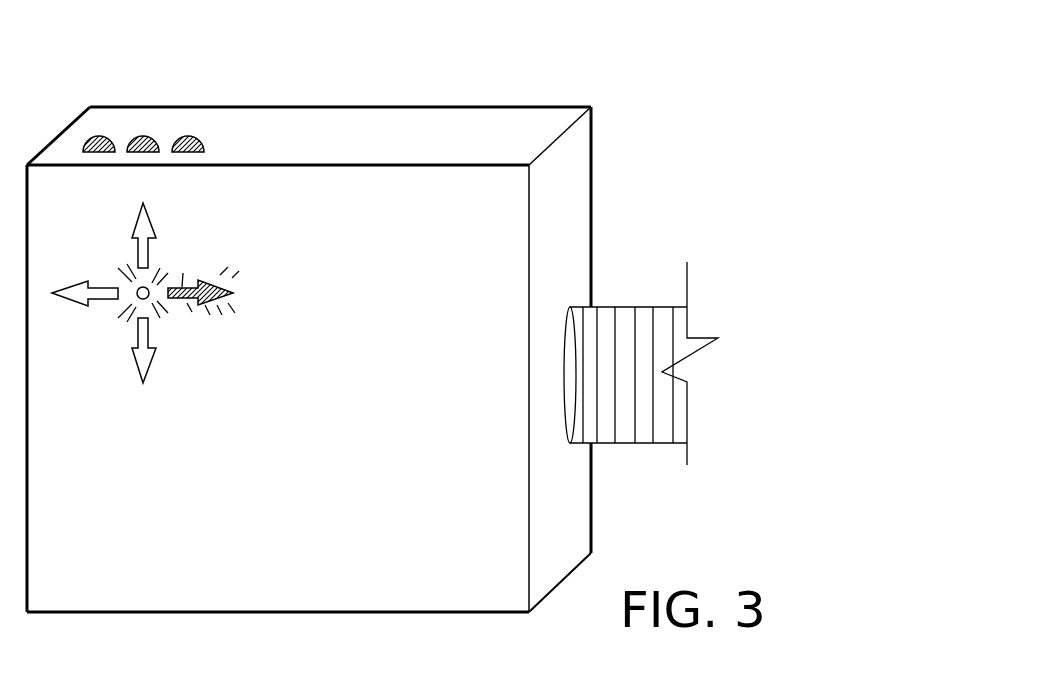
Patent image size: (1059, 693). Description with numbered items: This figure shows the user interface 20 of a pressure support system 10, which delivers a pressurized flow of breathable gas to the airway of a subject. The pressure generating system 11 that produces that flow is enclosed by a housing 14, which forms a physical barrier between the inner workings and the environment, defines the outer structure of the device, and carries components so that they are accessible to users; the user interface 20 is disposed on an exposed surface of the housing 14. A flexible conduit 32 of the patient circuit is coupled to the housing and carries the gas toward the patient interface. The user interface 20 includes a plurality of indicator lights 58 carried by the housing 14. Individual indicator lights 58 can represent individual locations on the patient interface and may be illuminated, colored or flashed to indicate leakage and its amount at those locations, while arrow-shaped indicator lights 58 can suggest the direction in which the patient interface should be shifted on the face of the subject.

The pressure support system 10 is at (680, 83).
The pressure generating system 11 is at (413, 82).
The housing 14 is at (493, 132).
The user interface 20 is at (267, 150).
The flexible conduit 32 is at (620, 312).
The indicator lights 58 is at (99, 136).